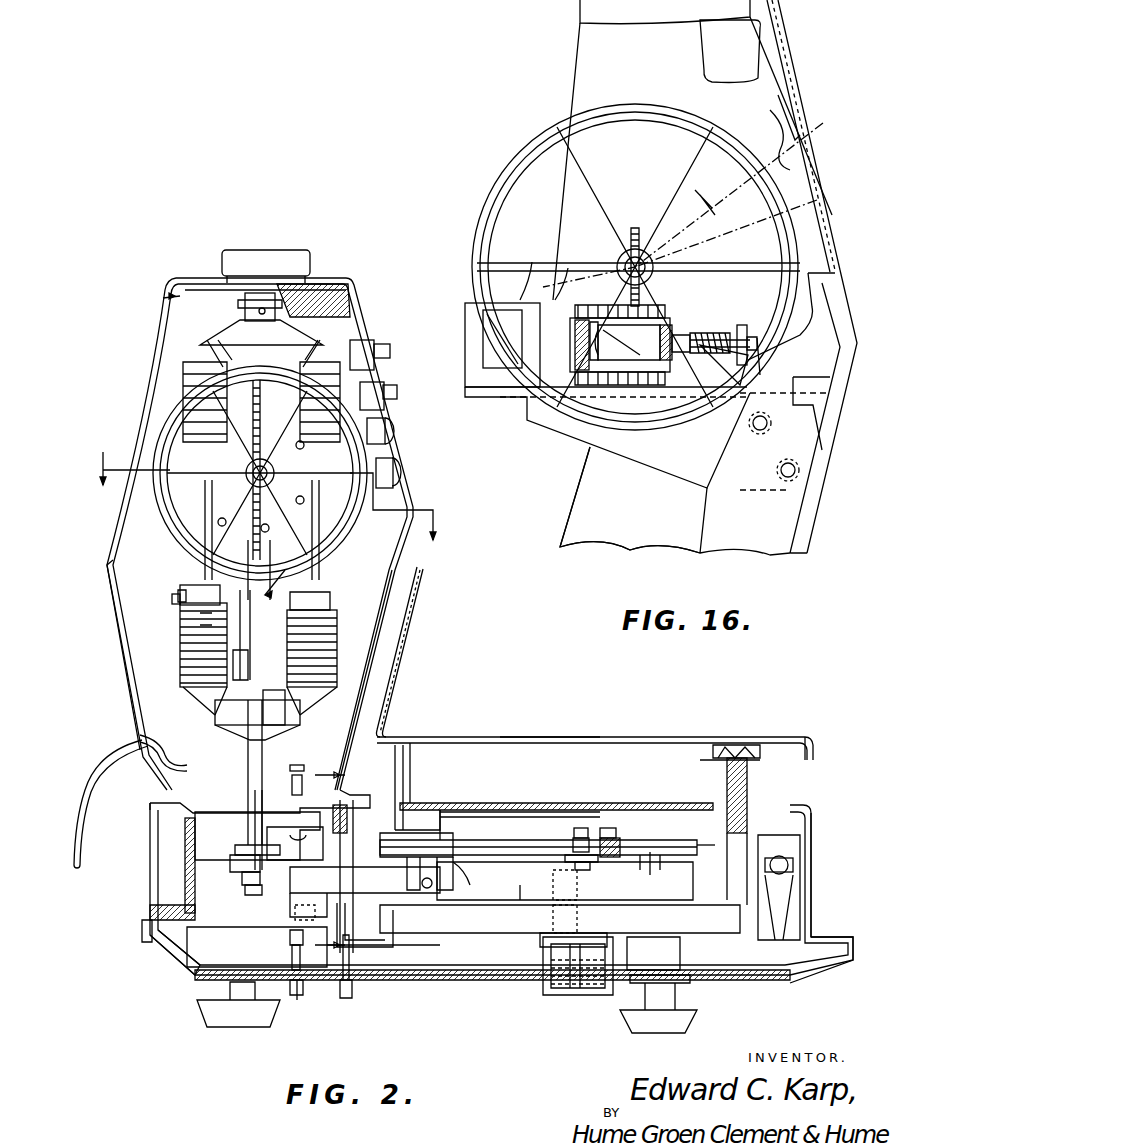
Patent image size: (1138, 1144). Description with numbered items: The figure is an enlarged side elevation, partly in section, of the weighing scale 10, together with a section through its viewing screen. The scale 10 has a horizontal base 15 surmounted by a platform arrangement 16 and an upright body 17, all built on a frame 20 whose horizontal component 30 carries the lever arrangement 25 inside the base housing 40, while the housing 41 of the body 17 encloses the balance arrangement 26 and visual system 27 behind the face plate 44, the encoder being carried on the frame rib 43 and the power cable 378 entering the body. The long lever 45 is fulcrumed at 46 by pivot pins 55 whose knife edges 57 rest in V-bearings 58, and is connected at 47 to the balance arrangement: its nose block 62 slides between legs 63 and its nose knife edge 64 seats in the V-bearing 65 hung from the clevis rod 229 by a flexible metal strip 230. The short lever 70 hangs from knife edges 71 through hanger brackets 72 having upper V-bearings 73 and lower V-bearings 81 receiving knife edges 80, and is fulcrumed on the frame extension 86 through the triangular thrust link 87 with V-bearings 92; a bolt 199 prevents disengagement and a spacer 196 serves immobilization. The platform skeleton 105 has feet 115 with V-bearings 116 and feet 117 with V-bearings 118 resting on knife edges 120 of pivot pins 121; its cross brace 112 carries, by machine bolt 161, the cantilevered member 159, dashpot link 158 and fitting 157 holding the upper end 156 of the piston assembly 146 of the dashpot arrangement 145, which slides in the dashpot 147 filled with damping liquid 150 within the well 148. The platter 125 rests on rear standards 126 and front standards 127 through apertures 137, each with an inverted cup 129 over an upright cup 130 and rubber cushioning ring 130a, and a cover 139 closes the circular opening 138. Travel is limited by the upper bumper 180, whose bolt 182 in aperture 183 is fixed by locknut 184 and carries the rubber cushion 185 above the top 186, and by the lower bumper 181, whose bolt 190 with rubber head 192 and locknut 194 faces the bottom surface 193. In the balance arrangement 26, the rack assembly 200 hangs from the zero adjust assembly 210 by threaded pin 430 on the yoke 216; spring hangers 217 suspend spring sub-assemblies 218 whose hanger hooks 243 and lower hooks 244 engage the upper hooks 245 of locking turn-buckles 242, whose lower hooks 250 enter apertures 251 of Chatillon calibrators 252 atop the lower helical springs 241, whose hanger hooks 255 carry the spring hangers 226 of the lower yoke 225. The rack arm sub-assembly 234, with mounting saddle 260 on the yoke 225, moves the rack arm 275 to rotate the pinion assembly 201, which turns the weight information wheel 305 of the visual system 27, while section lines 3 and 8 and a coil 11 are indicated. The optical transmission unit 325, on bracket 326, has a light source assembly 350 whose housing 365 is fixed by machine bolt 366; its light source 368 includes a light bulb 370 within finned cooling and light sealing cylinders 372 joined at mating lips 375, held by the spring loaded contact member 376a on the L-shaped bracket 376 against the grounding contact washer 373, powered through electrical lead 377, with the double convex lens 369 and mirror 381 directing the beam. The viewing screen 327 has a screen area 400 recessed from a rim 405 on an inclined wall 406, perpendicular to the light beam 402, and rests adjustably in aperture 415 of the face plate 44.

In FIG. 2, the weighing scale 10 is at (160, 305).
In FIG. 2, the upright body 17 is at (130, 708).
In FIG. 2, the housing 41 is at (118, 646).
In FIG. 2, the threaded pin 430 is at (248, 300).
In FIG. 2, the tare set, zero adjust, and zero stop assembly 210 is at (312, 290).
In FIG. 2, the yoke 216 is at (335, 320).
In FIG. 2, the spring hangers 217 is at (205, 350).
In FIG. 2, the spring sub-assemblies 218 is at (178, 378).
In FIG. 2, the hanger hook 243 is at (385, 348).
In FIG. 2, the lower hooks 244 is at (395, 468).
In FIG. 2, the weight information wheel 305 is at (152, 508).
In FIG. 16, the weight information wheel 305 is at (510, 158).
In FIG. 2, the pinion assembly 201 is at (262, 442).
In FIG. 2, the section line 3- 3 is at (266, 485).
In FIG. 2, the locking turn-buckle 242 is at (205, 520).
In FIG. 2, the rack arm 275 is at (262, 520).
In FIG. 2, the upper hooks 245 is at (320, 520).
In FIG. 2, the rack assembly 200 is at (300, 580).
In FIG. 2, the lower hooks 250 is at (200, 585).
In FIG. 2, the apertures 251 is at (200, 597).
In FIG. 2, the Chatillon calibrators 252 is at (172, 600).
In FIG. 2, the solenoid coil 11 is at (200, 640).
In FIG. 2, the lower helical spring 241 is at (200, 640).
In FIG. 2, the rack arm sub-assembly 234 is at (262, 632).
In FIG. 2, the hanger hook 255 is at (190, 695).
In FIG. 2, the spring hangers 226 is at (215, 712).
In FIG. 2, the yoke 225 is at (215, 722).
In FIG. 2, the mounting saddle 260 is at (292, 707).
In FIG. 2, the clevis rod 229 is at (248, 748).
In FIG. 2, the upper bumper 180 is at (302, 775).
In FIG. 2, the locknut 184 is at (290, 790).
In FIG. 2, the section line 8- 8 is at (329, 857).
In FIG. 2, the scale frame extension 86 is at (345, 800).
In FIG. 2, the aperture 183 is at (262, 800).
In FIG. 2, the bolt 182 is at (255, 800).
In FIG. 2, the horizontal base 15 is at (148, 960).
In FIG. 2, the platform arrangement 16 is at (818, 790).
In FIG. 2, the frame 20 is at (190, 978).
In FIG. 2, the horizontal component 30 is at (142, 938).
In FIG. 2, the connection point 47 is at (215, 858).
In FIG. 2, the nose block 62 is at (185, 880).
In FIG. 2, the power cable 378 is at (94, 812).
In FIG. 2, the flexible metal strip 230 is at (250, 845).
In FIG. 2, the top 186 is at (260, 847).
In FIG. 2, the legs 63 is at (230, 862).
In FIG. 2, the nose knife edge 64 is at (242, 878).
In FIG. 2, the V-bearing 65 is at (252, 895).
In FIG. 2, the rubber cushion 185 is at (295, 843).
In FIG. 2, the triangular thrust link 87 is at (353, 850).
In FIG. 2, the spacer 196 is at (320, 885).
In FIG. 2, the bottom surface 193 is at (296, 910).
In FIG. 2, the V-bearings 92 is at (378, 915).
In FIG. 2, the short lever 70 is at (450, 938).
In FIG. 2, the rubber head 192 is at (290, 938).
In FIG. 2, the lower bumper 181 is at (292, 950).
In FIG. 2, the locknut 194 is at (303, 990).
In FIG. 2, the bolt 190 is at (297, 1005).
In FIG. 2, the bolt 199 is at (352, 995).
In FIG. 2, the lever arrangement 25 is at (455, 970).
In FIG. 2, the apertures 137 is at (470, 748).
In FIG. 2, the rear standards 126 is at (420, 740).
In FIG. 2, the platter 125 is at (520, 737).
In FIG. 2, the rubber cushioning ring 130a is at (730, 745).
In FIG. 2, the upright cup 130 is at (745, 775).
In FIG. 2, the front standards 127 is at (812, 748).
In FIG. 2, the inverted cup 129 is at (715, 762).
In FIG. 2, the feet 117 is at (455, 815).
In FIG. 2, the circular opening 138 is at (505, 800).
In FIG. 2, the cover 139 is at (535, 812).
In FIG. 2, the V-bearings 118 is at (416, 853).
In FIG. 2, the long lever 45 is at (480, 848).
In FIG. 2, the upper end 156 is at (573, 843).
In FIG. 2, the cantilevered member 159 is at (582, 828).
In FIG. 2, the machine bolt 161 is at (608, 828).
In FIG. 2, the cross brace 112 is at (620, 840).
In FIG. 2, the platform skeleton 105 is at (672, 855).
In FIG. 2, the feet 115 is at (710, 845).
In FIG. 2, the upper V-bearings 73 is at (565, 860).
In FIG. 2, the dashpot link 158 is at (590, 866).
In FIG. 2, the fitting 157 is at (577, 888).
In FIG. 2, the knife edges 71 is at (545, 887).
In FIG. 2, the pivot pins 121 is at (465, 870).
In FIG. 2, the knife edges 120 is at (500, 890).
In FIG. 2, the knife edges 80 is at (560, 918).
In FIG. 2, the lower V-bearings 81 is at (553, 918).
In FIG. 2, the V-bearings 116 is at (735, 900).
In FIG. 2, the pivot pins 55 is at (778, 860).
In FIG. 2, the knife edges 57 is at (795, 870).
In FIG. 2, the V-bearings 58 is at (780, 900).
In FIG. 2, the fulcrum 46 is at (815, 850).
In FIG. 2, the housing 40 is at (818, 878).
In FIG. 2, the hanger brackets 72 is at (555, 940).
In FIG. 2, the dashpot arrangement 145 is at (543, 1000).
In FIG. 2, the damping liquid 150 is at (551, 990).
In FIG. 2, the piston assembly 146 is at (575, 992).
In FIG. 2, the dashpot 147 is at (578, 995).
In FIG. 2, the well 148 is at (635, 975).
In FIG. 2, the balance arrangement 26 is at (360, 690).
In FIG. 2, the face plate 44 is at (400, 645).
In FIG. 16, the face plate 44 is at (770, 68).
In FIG. 16, the rib 43 is at (570, 82).
In FIG. 16, the inclined wall 406 is at (775, 120).
In FIG. 16, the rim 405 is at (798, 105).
In FIG. 16, the viewing screen 327 is at (820, 180).
In FIG. 16, the screen area 400 is at (823, 123).
In FIG. 16, the spring loaded contact member 376a is at (785, 213).
In FIG. 16, the light beam 402 is at (712, 193).
In FIG. 16, the aperture 415 is at (835, 260).
In FIG. 16, the visual system 27 is at (465, 285).
In FIG. 16, the magnified light source assembly 350 is at (660, 270).
In FIG. 16, the housing 365 is at (527, 262).
In FIG. 16, the machine bolt 366 is at (568, 268).
In FIG. 16, the mirror 381 is at (483, 325).
In FIG. 16, the optical transmission unit 325 is at (530, 395).
In FIG. 16, the bracket 326 is at (660, 478).
In FIG. 16, the light bulb 370 is at (615, 385).
In FIG. 16, the double convex lens 369 is at (582, 372).
In FIG. 16, the mating lips 375 is at (630, 385).
In FIG. 16, the finned cooling and light sealing cylinders 372 is at (608, 318).
In FIG. 16, the grounding contact washer 373 is at (685, 320).
In FIG. 16, the light source 368 is at (703, 333).
In FIG. 16, the L-shaped bracket 376 is at (742, 325).
In FIG. 16, the electrical lead 377 is at (770, 362).